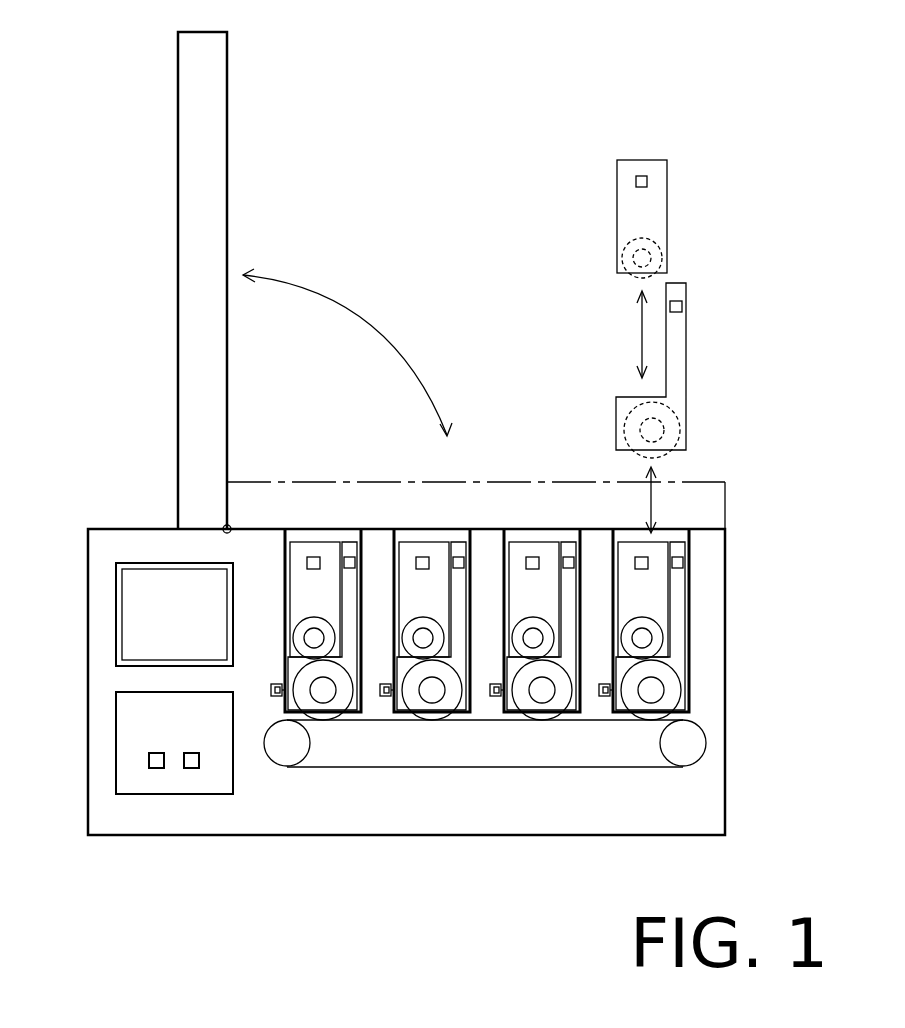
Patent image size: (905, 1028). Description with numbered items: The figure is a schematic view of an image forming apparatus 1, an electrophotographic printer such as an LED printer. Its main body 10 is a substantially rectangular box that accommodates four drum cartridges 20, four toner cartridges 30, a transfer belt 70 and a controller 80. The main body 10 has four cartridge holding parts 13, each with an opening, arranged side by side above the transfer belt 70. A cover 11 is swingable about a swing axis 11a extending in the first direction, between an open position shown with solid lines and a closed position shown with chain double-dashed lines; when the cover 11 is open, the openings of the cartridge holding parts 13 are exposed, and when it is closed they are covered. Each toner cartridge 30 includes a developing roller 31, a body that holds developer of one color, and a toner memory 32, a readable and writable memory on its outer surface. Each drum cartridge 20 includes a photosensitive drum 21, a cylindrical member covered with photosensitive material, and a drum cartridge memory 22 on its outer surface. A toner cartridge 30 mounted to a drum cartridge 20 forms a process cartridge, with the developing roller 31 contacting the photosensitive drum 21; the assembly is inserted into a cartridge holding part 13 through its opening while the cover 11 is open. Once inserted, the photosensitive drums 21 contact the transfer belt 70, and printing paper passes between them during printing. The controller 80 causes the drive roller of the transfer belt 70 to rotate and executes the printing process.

The image forming apparatus 1 is at (468, 175).
The main body 10 is at (717, 632).
The cover 11 is at (188, 104).
The swing axis 11a is at (229, 525).
The cartridge holding part 13 is at (323, 537).
The drum cartridge 20 is at (703, 373).
The photosensitive drum 21 is at (683, 688).
The drum cartridge memory 22 is at (566, 556).
The toner cartridge 30 is at (680, 222).
The developing roller 31 is at (656, 257).
The toner memory 32 is at (531, 556).
The transfer belt 70 is at (466, 767).
The controller 80 is at (116, 735).